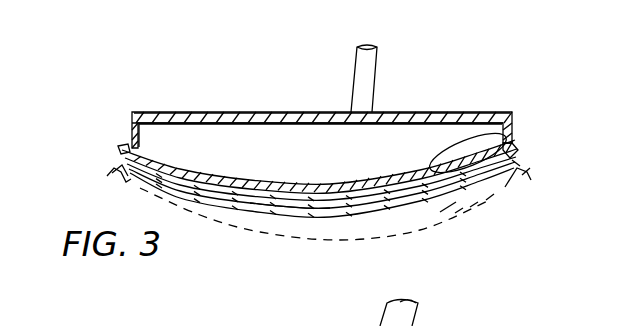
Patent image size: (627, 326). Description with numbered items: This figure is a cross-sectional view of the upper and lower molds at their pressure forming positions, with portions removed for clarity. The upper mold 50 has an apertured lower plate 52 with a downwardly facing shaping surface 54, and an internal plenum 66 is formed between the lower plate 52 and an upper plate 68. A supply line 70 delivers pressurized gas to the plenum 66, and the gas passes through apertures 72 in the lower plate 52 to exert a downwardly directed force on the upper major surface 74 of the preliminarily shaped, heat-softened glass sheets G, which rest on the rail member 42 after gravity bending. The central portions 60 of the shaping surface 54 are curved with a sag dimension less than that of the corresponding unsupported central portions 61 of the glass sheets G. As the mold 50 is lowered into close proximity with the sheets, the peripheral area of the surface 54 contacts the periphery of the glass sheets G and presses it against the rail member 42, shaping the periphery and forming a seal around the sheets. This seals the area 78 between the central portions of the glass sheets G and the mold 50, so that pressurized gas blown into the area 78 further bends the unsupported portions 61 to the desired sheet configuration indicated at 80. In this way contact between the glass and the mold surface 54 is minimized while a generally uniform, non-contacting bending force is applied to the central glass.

The upper mold 50 is at (464, 110).
The apertured lower plate 52 is at (500, 132).
The downwardly facing shaping surface 54 is at (372, 196).
The central portions of shaping surface 60 is at (266, 197).
The unsupported central portions of glass sheets 61 is at (380, 217).
The internal plenum 66 is at (221, 135).
The upper plate 68 is at (181, 112).
The supply line 70 is at (353, 63).
The apertures 72 is at (262, 202).
The upper major surface 74 is at (320, 205).
The sealed area 78 is at (298, 203).
The desired sheet configuration 80 is at (470, 207).
The rail member 42 is at (112, 173).
The glass sheets G is at (448, 204).